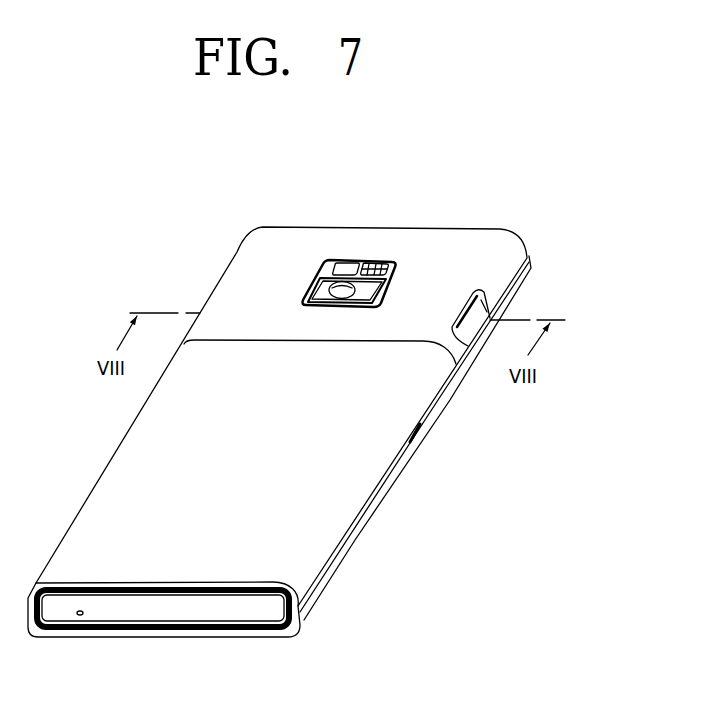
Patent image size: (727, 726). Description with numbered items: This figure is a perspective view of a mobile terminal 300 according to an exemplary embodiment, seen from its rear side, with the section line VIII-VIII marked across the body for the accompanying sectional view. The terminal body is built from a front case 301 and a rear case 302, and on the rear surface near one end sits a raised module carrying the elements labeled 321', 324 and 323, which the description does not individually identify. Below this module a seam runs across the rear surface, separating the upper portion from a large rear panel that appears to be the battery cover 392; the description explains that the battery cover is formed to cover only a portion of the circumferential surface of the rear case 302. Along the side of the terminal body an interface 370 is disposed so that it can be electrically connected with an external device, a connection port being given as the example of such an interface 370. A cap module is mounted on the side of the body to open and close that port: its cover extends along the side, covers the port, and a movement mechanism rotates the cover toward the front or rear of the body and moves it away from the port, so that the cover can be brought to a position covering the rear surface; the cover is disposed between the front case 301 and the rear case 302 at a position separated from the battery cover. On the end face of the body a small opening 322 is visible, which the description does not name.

The mobile terminal 300 is at (320, 423).
The camera 321' is at (340, 229).
The flash 324 is at (347, 262).
The speaker 323 is at (378, 262).
The interface 370 is at (478, 306).
The battery cover 392 is at (333, 458).
The rear case 302 is at (308, 578).
The cover 301 is at (312, 605).
The microphone hole 322 is at (78, 617).